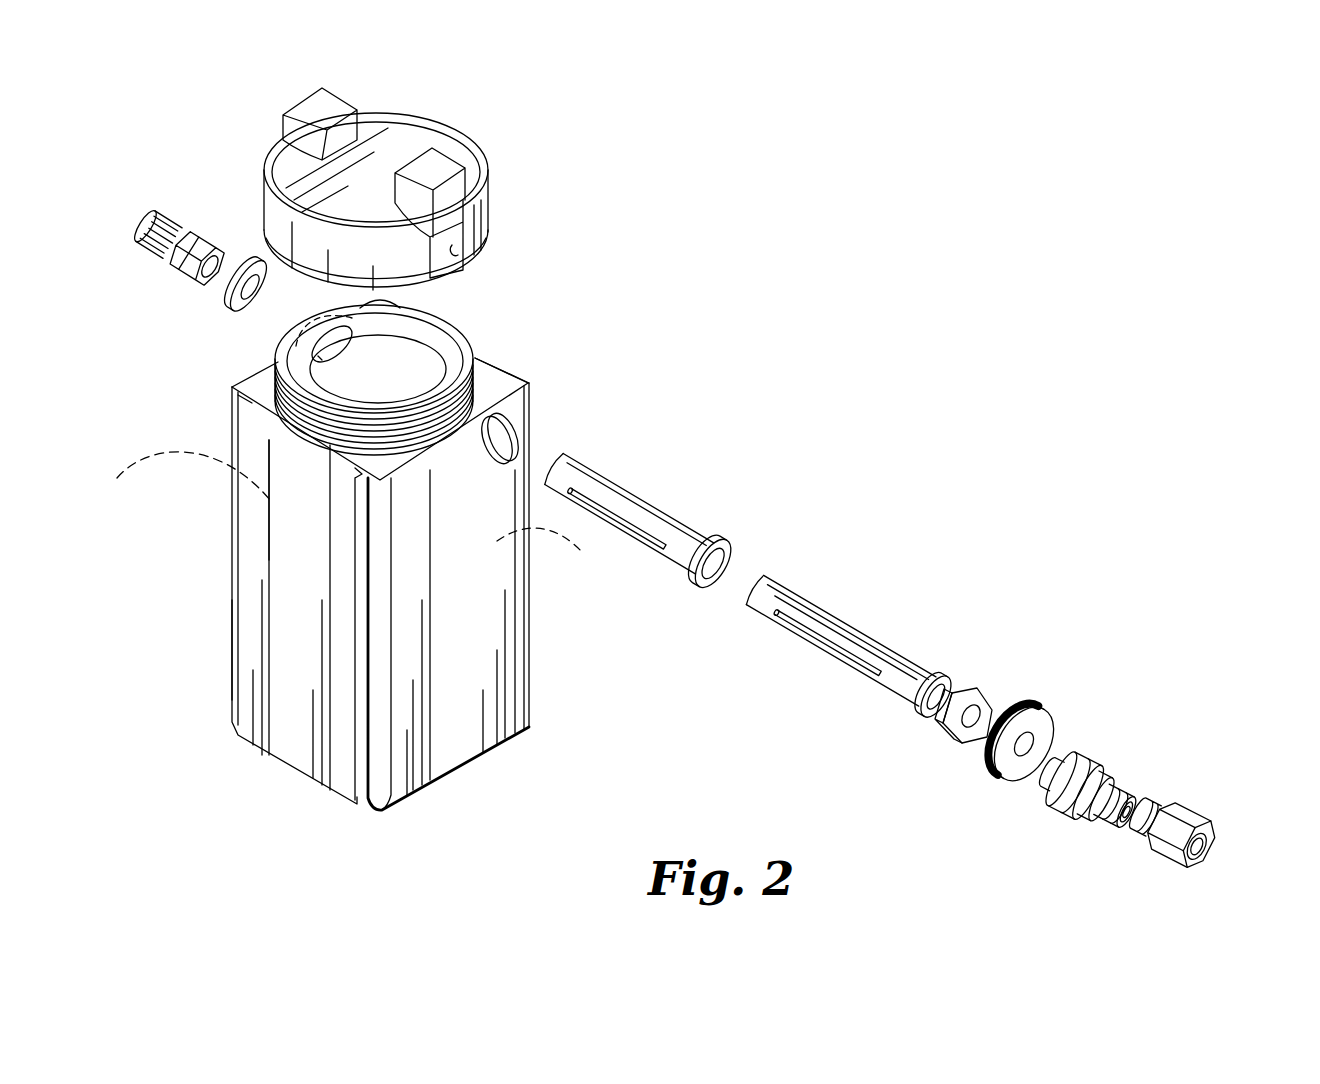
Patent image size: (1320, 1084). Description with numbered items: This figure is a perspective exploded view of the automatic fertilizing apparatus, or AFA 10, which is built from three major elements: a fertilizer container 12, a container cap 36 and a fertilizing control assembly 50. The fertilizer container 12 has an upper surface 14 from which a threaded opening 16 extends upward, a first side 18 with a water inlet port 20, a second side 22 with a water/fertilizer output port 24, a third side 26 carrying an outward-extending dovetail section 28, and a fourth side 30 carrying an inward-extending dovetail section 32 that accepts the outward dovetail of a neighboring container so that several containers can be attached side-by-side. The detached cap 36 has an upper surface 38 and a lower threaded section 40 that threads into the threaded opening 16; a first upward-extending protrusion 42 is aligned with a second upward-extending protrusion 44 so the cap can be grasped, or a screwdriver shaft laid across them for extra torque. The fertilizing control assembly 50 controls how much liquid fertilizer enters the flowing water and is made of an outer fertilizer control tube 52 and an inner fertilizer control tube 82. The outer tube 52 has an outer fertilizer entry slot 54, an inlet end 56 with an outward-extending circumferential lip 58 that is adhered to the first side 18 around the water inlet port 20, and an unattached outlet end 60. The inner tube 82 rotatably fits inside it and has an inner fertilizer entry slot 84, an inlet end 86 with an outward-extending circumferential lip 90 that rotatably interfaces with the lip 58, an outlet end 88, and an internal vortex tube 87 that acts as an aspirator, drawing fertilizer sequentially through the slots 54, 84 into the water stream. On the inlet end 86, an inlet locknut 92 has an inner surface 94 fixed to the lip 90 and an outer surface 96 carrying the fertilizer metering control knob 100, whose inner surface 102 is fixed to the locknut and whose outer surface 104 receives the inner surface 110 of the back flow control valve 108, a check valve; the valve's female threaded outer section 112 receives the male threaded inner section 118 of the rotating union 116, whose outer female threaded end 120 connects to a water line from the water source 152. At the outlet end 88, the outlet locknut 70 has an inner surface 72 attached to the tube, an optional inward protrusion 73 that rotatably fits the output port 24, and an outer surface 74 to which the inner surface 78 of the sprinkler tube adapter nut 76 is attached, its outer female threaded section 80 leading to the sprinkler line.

The automatic fertilizing apparatus 10 is at (706, 237).
The fertilizer container 12 is at (533, 391).
The upper surface 14 is at (482, 365).
The threaded opening 16 is at (275, 418).
The first side 18 is at (470, 646).
The water inlet port 20 is at (513, 418).
The second side 22 is at (175, 479).
The water/fertilizer output port 24 is at (327, 343).
The third side 26 is at (290, 573).
The outward-extending dovetail section 28 is at (352, 652).
The fourth side 30 is at (559, 549).
The inward-extending dovetail section 32 is at (509, 379).
The container cap 36 is at (480, 222).
The upper surface 38 is at (402, 140).
The lower threaded section 40 is at (470, 262).
The first upward-extending protrusion 42 is at (433, 170).
The second upward-extending protrusion 44 is at (333, 107).
The fertilizing control assembly 50 is at (964, 559).
The outer fertilizer control tube 52 is at (647, 519).
The outer fertilizer entry slot 54 is at (650, 556).
The inlet end 56 is at (708, 538).
The outward-extending circumferential lip 58 is at (725, 546).
The outlet end 60 is at (547, 462).
The outlet locknut 70 is at (160, 228).
The inner surface 72 is at (240, 316).
The inward protrusion 73 is at (240, 316).
The outer surface 74 is at (255, 262).
The sprinkler tube adapter nut 76 is at (193, 277).
The inner surface 78 is at (232, 288).
The outer female threaded section 80 is at (160, 228).
The inner fertilizer control tube 82 is at (856, 640).
The inner fertilizer entry slot 84 is at (832, 648).
The inlet end 86 is at (928, 675).
The vortex tube 87 is at (842, 608).
The outlet end 88 is at (764, 578).
The outward-extending circumferential lip 90 is at (945, 682).
The inlet locknut 92 is at (975, 697).
The inner surface 94 is at (950, 713).
The outer surface 96 is at (953, 745).
The fertilizer metering control knob 100 is at (1015, 759).
The inner surface 102 is at (985, 750).
The outer surface 104 is at (1027, 758).
The back flow control valve 108 is at (1084, 801).
The inner surface 110 is at (1048, 778).
The female threaded outer section 112 is at (1114, 820).
The rotating union 116 is at (1177, 851).
The male threaded inner section 118 is at (1148, 845).
The outer female threaded end 120 is at (1193, 860).
The water source 152 is at (1214, 857).